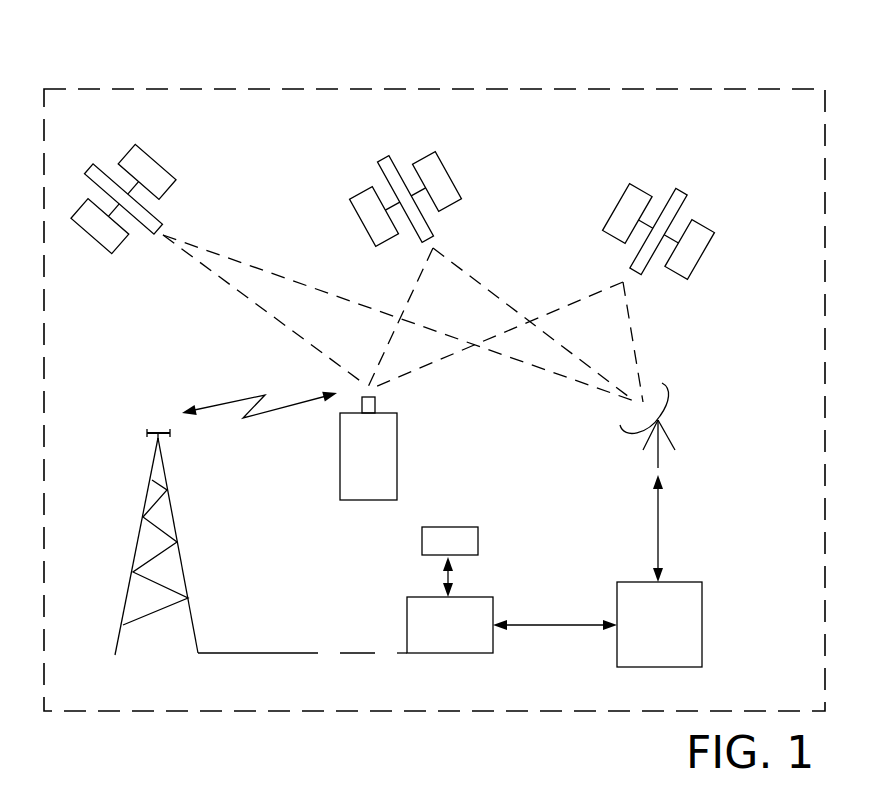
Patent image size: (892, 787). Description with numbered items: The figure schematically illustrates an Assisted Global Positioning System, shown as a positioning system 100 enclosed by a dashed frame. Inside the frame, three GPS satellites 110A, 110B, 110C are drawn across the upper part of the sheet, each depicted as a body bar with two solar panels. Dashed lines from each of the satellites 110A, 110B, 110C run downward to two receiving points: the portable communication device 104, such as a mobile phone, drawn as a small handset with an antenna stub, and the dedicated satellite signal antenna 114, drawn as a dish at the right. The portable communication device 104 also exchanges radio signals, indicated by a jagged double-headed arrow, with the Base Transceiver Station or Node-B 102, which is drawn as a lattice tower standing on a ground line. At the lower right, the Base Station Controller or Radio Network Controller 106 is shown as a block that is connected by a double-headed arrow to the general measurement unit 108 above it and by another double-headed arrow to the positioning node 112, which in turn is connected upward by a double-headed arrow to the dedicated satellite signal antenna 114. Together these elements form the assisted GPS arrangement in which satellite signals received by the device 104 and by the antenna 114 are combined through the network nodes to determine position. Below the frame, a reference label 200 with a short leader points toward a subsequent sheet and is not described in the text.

The positioning system 100 is at (622, 76).
The Base Transceiver Station or Node-B 102 is at (140, 530).
The portable communication device 104 is at (397, 440).
The Base Station Controller or Radio Network Controller 106 is at (477, 597).
The general measurement unit 108 is at (465, 527).
The GPS satellite 110A is at (186, 166).
The GPS satellite 110B is at (463, 160).
The GPS satellite 110C is at (705, 188).
The positioning node 112 is at (685, 582).
The dedicated satellite signal antenna 114 is at (685, 389).
The method (continued on next sheet) 200 is at (100, 786).